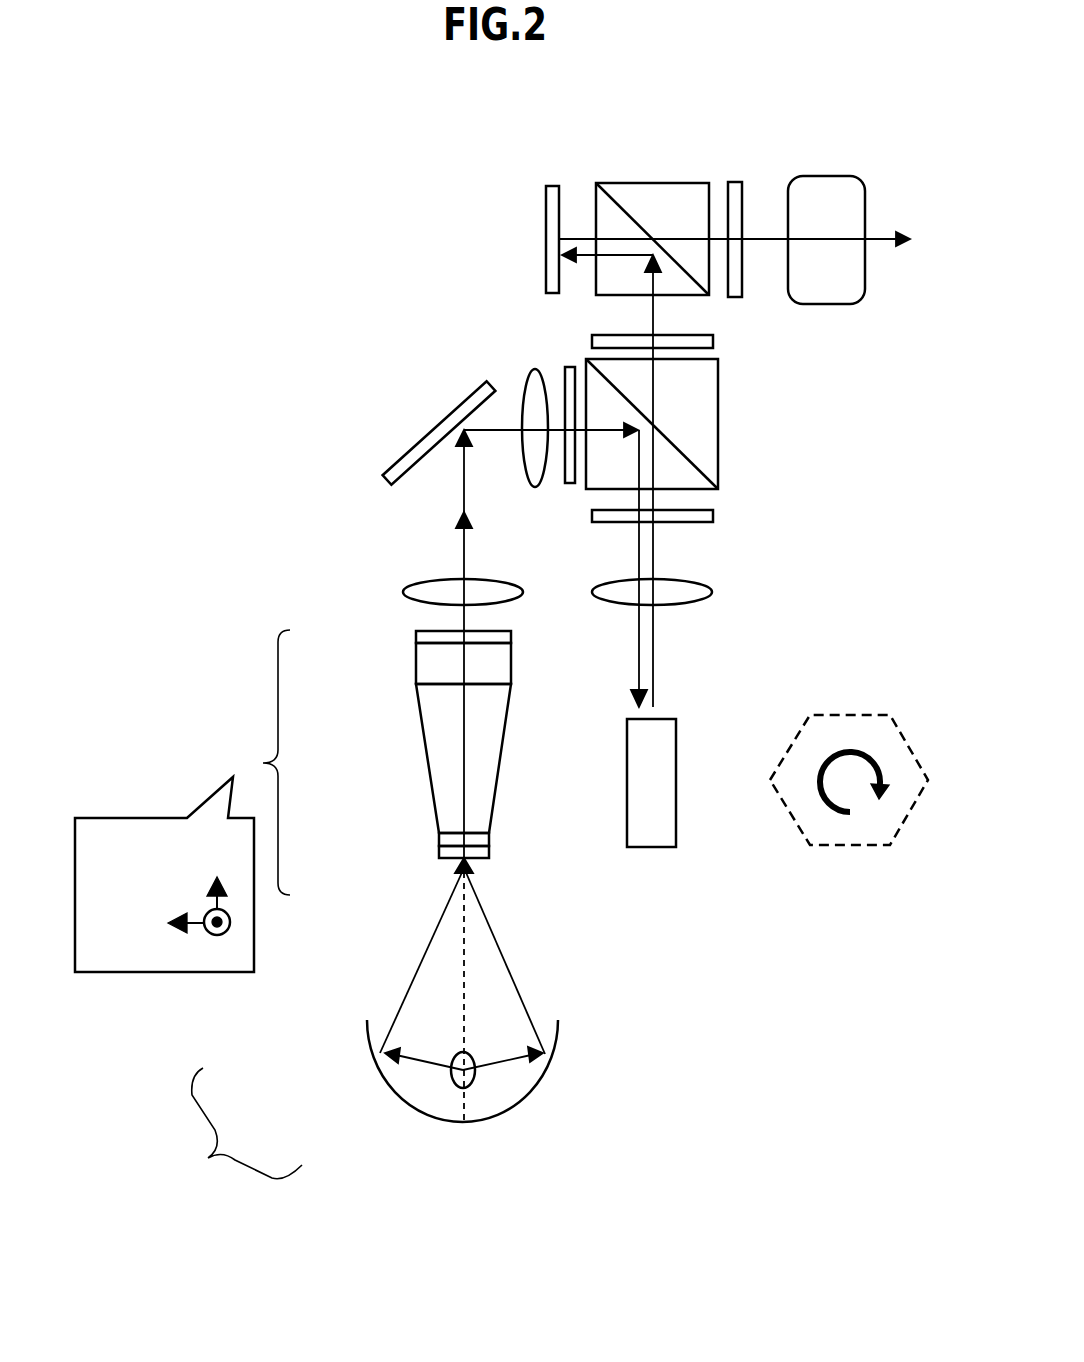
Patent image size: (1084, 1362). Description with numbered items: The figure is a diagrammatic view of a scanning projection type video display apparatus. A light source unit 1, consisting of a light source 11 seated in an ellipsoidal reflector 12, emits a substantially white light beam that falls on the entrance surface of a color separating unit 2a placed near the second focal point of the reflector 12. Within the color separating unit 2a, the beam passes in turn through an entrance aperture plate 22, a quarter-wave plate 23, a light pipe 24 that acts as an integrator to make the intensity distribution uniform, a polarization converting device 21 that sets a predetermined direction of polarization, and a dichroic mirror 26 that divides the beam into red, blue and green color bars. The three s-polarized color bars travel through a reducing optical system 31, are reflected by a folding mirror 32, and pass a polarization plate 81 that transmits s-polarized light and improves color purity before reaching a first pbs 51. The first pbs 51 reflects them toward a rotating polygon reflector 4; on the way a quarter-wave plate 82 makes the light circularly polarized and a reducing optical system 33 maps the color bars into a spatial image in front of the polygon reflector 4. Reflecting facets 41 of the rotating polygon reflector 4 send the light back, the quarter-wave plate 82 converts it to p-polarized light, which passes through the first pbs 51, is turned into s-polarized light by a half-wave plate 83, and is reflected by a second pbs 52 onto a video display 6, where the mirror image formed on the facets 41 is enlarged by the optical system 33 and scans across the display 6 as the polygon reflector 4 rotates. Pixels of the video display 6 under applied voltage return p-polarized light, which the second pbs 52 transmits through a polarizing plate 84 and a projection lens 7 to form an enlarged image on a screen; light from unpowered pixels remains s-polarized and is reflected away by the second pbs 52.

The light source unit 1 is at (375, 1101).
The light source 11 is at (453, 1080).
The ellipsoidal reflector 12 is at (366, 1037).
The color separating unit 2a is at (293, 801).
The polarization converting device 21 is at (416, 673).
The entrance aperture plate 22 is at (439, 856).
The quarter-wave plate 23 is at (439, 845).
The light pipe 24 is at (425, 742).
The dichroic mirror 26 is at (416, 640).
The reducing optical system 31 is at (522, 457).
The reflection mirror 32 is at (445, 421).
The reducing optical system 33 is at (706, 600).
The rotating polygon reflector 4 is at (810, 813).
The reflecting facets 41 is at (850, 715).
The first pbs 51 is at (718, 418).
The second pbs 52 is at (657, 183).
The video display 6 is at (546, 195).
The projection lens 7 is at (830, 176).
The polarization plate 81 is at (565, 372).
The quarter-wave plate 82 is at (713, 515).
The half-wave plate 83 is at (713, 341).
The polarizing plate 84 is at (738, 182).